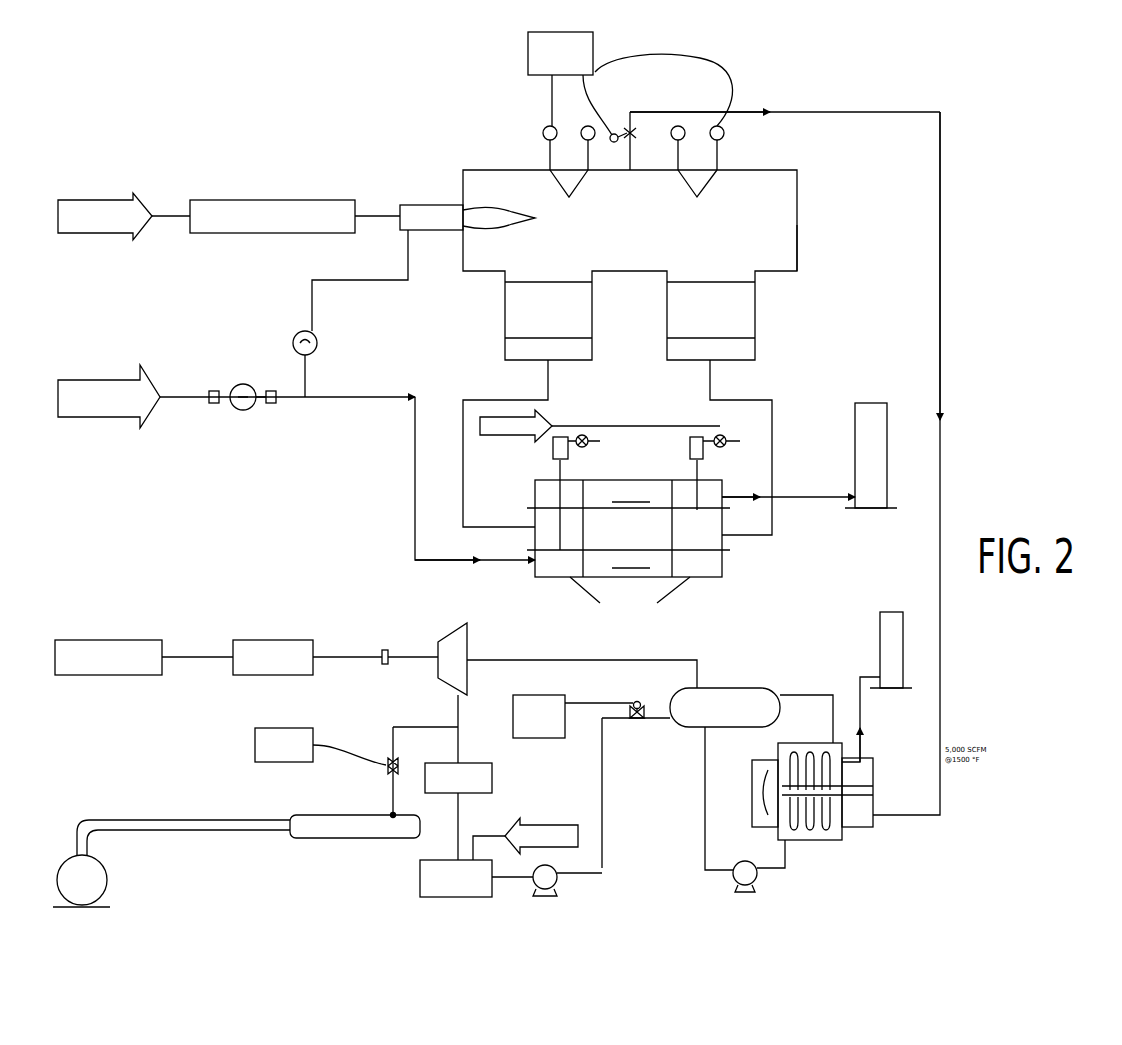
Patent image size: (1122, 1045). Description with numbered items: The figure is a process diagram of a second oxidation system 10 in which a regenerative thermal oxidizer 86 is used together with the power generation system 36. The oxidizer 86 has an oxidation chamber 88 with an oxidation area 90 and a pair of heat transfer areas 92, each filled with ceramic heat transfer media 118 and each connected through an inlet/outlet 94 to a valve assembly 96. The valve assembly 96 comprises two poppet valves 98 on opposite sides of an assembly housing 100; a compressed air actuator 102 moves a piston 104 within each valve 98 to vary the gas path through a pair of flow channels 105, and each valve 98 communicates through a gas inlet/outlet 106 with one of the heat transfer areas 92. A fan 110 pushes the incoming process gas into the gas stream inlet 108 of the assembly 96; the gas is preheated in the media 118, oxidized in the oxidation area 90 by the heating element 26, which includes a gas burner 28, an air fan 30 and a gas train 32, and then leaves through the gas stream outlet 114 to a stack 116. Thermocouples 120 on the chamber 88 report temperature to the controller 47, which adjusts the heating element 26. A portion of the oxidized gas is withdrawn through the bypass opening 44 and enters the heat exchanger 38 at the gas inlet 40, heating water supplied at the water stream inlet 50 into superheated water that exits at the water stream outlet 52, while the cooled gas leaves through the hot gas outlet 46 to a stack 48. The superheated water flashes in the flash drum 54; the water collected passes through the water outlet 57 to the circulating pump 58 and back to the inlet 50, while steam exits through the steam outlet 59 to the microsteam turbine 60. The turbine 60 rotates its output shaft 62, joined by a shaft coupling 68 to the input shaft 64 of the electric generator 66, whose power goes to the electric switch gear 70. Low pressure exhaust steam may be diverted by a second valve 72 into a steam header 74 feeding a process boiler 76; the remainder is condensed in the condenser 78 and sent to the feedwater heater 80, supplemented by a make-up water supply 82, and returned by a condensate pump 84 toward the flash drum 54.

The oxidation system 10 is at (365, 150).
The heating element 26 is at (248, 190).
The gas burner 28 is at (406, 202).
The air fan 30 is at (293, 343).
The gas train 32 is at (197, 238).
The power generation system 36 is at (915, 852).
The heat exchanger 38 is at (848, 840).
The gas inlet 40 is at (873, 790).
The bypass opening 44 is at (633, 145).
The hot gas outlet 46 is at (862, 755).
The controller 47 is at (528, 45).
The stack 48 is at (880, 630).
The water stream inlet 50 is at (790, 842).
The water stream outlet 52 is at (833, 745).
The flash drum 54 is at (722, 688).
The water outlet 57 is at (703, 732).
The circulating pump 58 is at (718, 890).
The steam outlet 59 is at (700, 688).
The microsteam turbine 60 is at (445, 640).
The output shaft 62 is at (412, 657).
The input shaft 64 is at (335, 657).
The electric generator 66 is at (262, 640).
The shaft coupling 68 is at (384, 650).
The electric switch gear 70 is at (100, 640).
The second valve 72 is at (388, 760).
The steam header 74 is at (307, 838).
The process boiler 76 is at (108, 868).
The condenser 78 is at (492, 788).
The feedwater heater 80 is at (420, 878).
The make-up water supply 82 is at (556, 822).
The condensate pump 84 is at (536, 887).
The regenerative thermal oxidizer 86 is at (805, 232).
The oxidation chamber 88 is at (797, 195).
The oxidation area 90 is at (770, 250).
The heat transfer areas 92 is at (505, 347).
The inlet/outlet 94 is at (550, 365).
The valve assembly 96 is at (714, 590).
The poppet valves 98 is at (532, 492).
The assembly housing 100 is at (625, 479).
The compressed air actuator 102 is at (680, 450).
The piston 104 is at (555, 525).
The flow channels 105 is at (631, 527).
The gas inlet/outlet 106 is at (540, 525).
The gas stream inlet 108 is at (540, 577).
The fan 110 is at (235, 410).
The gas stream outlet 114 is at (735, 515).
The stack 116 is at (856, 403).
The ceramic heat transfer media 118 is at (510, 298).
The thermocouples 120 is at (543, 135).